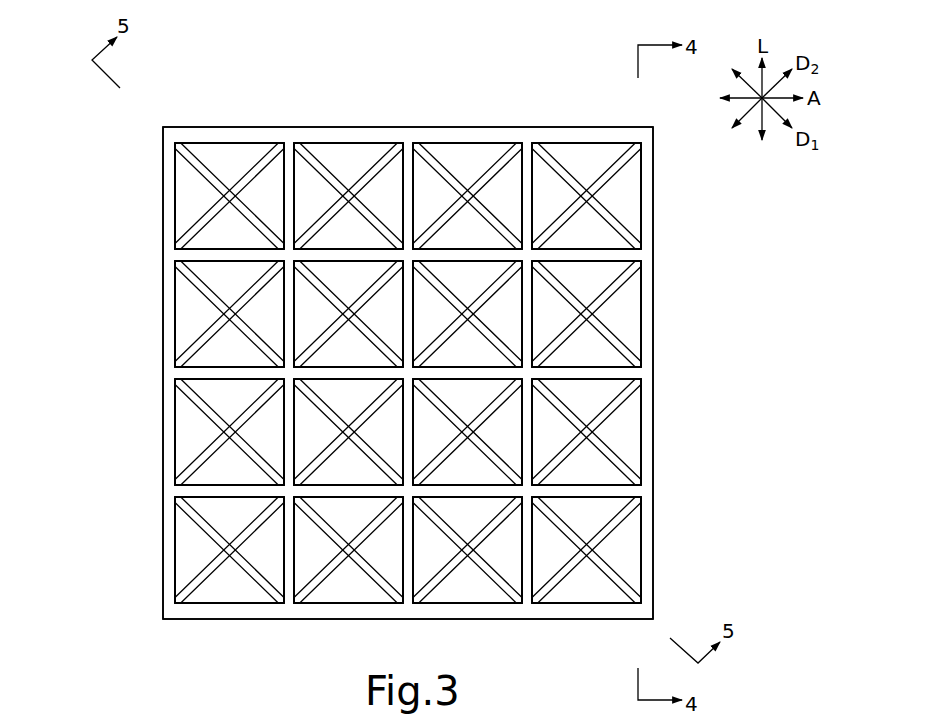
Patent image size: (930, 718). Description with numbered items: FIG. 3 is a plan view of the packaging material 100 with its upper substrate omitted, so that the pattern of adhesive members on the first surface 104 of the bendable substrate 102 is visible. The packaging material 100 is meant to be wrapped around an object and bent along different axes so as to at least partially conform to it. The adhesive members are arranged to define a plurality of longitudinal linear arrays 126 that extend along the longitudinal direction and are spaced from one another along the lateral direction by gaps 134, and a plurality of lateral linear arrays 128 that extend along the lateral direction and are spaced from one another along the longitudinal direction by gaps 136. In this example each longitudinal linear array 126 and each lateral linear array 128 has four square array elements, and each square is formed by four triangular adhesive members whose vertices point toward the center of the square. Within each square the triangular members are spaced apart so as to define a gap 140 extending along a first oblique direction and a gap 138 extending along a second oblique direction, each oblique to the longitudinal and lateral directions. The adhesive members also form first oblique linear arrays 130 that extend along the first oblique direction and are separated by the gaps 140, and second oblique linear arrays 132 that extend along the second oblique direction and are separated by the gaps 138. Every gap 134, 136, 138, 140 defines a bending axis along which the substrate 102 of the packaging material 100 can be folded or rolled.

The packaging material 100 is at (87, 142).
The bendable substrate 102 is at (648, 158).
The first surface 104 is at (647, 186).
The longitudinal linear arrays 126 is at (230, 120).
The lateral linear arrays 128 is at (145, 195).
The first oblique linear arrays 130 is at (235, 627).
The second oblique linear arrays 132 is at (218, 627).
The gaps 134 is at (289, 98).
The gaps 136 is at (668, 255).
The gap 138 is at (288, 140).
The gap 140 is at (173, 141).